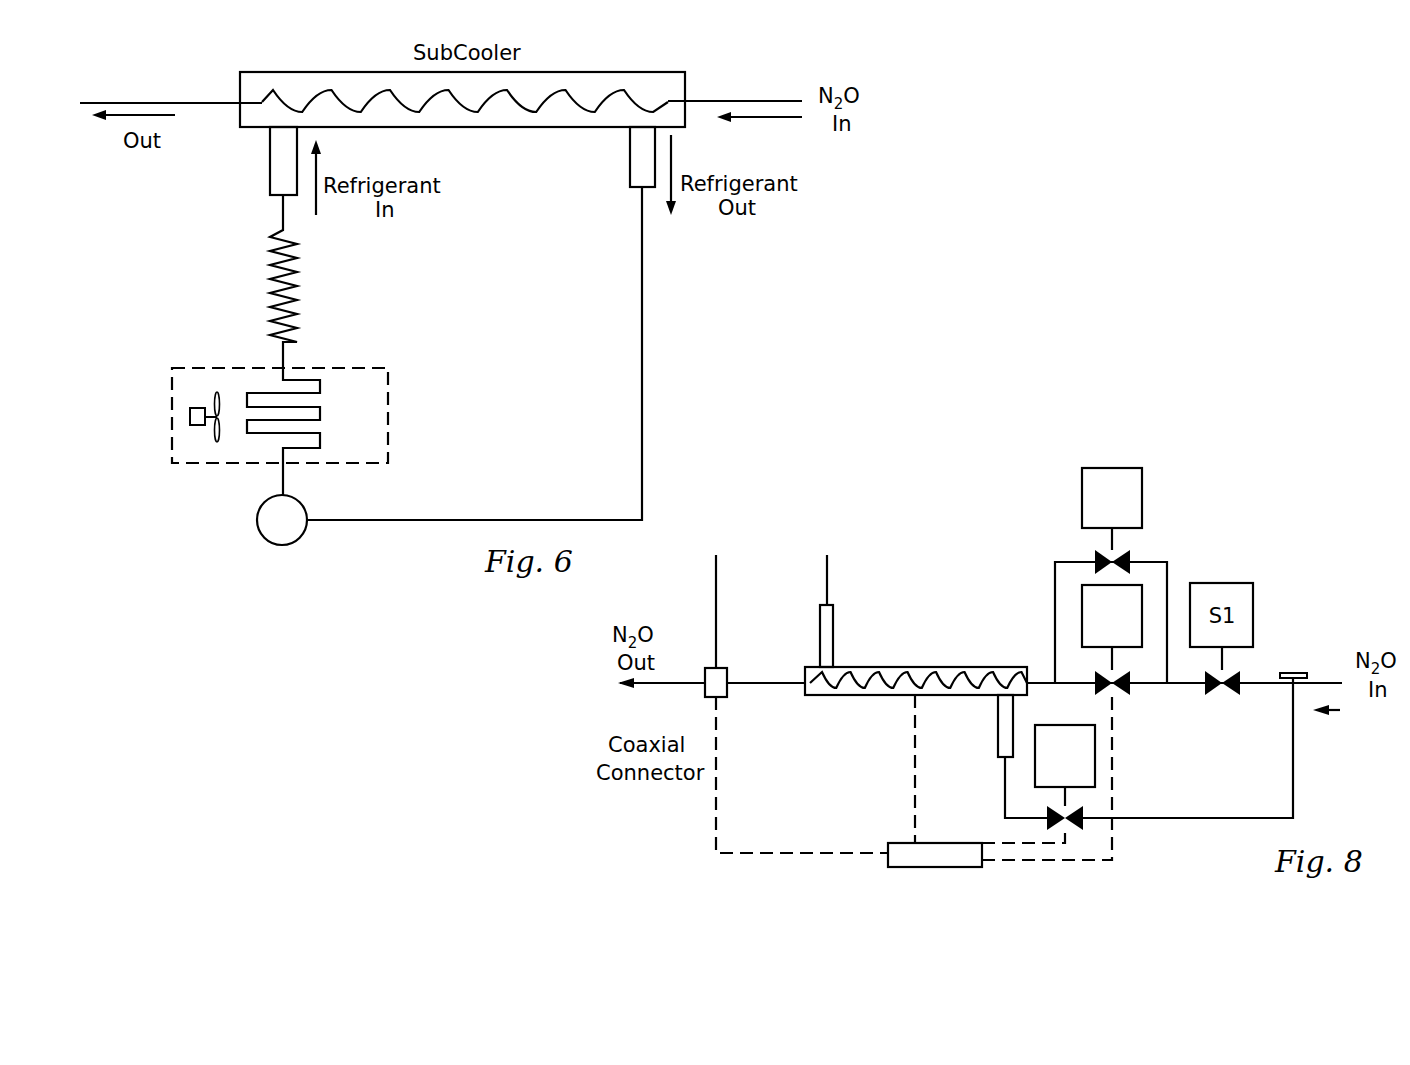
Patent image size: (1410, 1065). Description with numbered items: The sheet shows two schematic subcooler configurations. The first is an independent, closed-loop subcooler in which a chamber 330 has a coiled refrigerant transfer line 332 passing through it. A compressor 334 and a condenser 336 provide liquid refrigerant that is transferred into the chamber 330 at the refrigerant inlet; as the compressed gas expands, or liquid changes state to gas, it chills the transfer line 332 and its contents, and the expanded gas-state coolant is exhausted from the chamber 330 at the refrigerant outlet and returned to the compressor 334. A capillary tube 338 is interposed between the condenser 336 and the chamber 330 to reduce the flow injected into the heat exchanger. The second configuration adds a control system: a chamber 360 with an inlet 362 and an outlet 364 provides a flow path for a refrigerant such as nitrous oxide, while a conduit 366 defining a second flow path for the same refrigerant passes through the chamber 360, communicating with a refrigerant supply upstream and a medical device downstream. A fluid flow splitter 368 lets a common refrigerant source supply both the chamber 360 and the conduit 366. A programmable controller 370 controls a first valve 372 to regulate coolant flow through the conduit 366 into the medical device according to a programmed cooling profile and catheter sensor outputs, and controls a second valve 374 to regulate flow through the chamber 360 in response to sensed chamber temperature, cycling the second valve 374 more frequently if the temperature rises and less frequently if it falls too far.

In FIG. 6, the chamber 330 is at (583, 72).
In FIG. 6, the coiled refrigerant transfer line 332 is at (347, 92).
In FIG. 6, the compressor 334 is at (258, 520).
In FIG. 6, the condenser 336 is at (172, 393).
In FIG. 6, the capillary tube 338 is at (270, 262).
In FIG. 8, the chamber 360 is at (856, 698).
In FIG. 8, the inlet 362 is at (998, 718).
In FIG. 8, the outlet 364 is at (835, 612).
In FIG. 8, the conduit 366 is at (1045, 678).
In FIG. 8, the fluid flow splitter 368 is at (1293, 671).
In FIG. 8, the programmable controller 370 is at (893, 843).
In FIG. 8, the first valve 372 is at (1115, 690).
In FIG. 8, the second valve 374 is at (1062, 815).